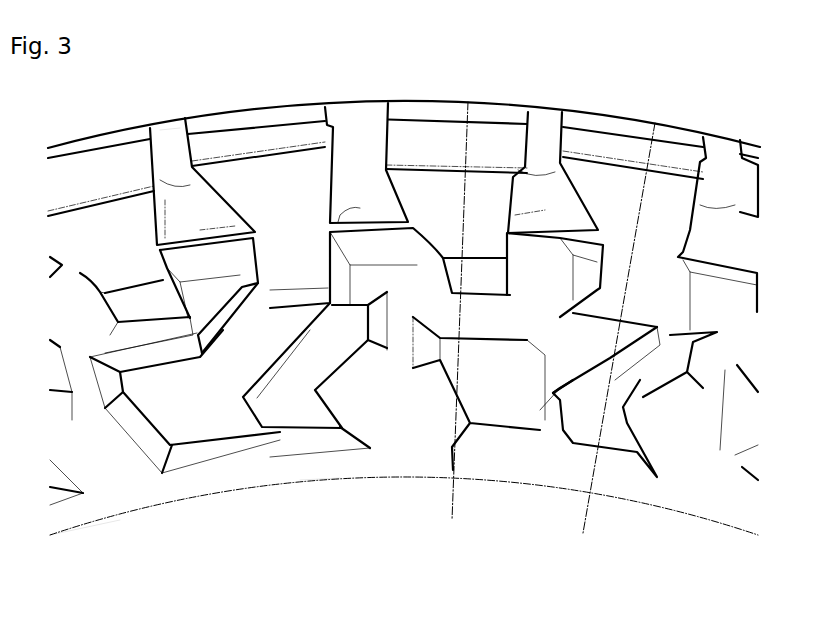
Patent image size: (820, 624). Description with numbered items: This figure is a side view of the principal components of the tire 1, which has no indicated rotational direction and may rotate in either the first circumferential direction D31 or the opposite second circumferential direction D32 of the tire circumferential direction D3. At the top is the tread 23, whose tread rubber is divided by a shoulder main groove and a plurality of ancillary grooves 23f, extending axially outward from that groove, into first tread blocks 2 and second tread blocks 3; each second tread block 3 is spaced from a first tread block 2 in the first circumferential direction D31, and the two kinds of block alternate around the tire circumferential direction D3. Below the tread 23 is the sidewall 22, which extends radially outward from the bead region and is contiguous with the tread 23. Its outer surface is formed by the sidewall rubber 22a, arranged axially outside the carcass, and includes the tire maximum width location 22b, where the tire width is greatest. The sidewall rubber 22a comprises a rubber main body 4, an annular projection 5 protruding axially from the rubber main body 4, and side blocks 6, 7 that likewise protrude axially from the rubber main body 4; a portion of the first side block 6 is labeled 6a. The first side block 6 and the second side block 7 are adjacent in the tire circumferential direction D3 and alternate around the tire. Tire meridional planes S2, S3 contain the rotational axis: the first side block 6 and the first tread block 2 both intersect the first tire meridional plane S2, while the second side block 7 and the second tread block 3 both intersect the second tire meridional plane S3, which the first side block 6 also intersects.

The tire 1 is at (748, 74).
The first tread block 2 is at (250, 115).
The second tread block 3 is at (115, 135).
The rubber main body 4 is at (78, 437).
The annular projection 5 is at (205, 247).
The first side block 6 is at (227, 425).
The chevron inner portion 6a is at (440, 320).
The second side block 7 is at (95, 223).
The sidewall 22 is at (739, 518).
The sidewall rubber 22a is at (77, 458).
The tire maximum width location 22b is at (320, 480).
The tread 23 is at (69, 113).
The ancillary groove 23f is at (177, 135).
The tire circumferential direction D3 is at (440, 78).
The first circumferential direction D31 is at (356, 78).
The second circumferential direction D32 is at (459, 78).
The first tire meridional plane S2 is at (587, 512).
The second tire meridional plane S3 is at (452, 497).